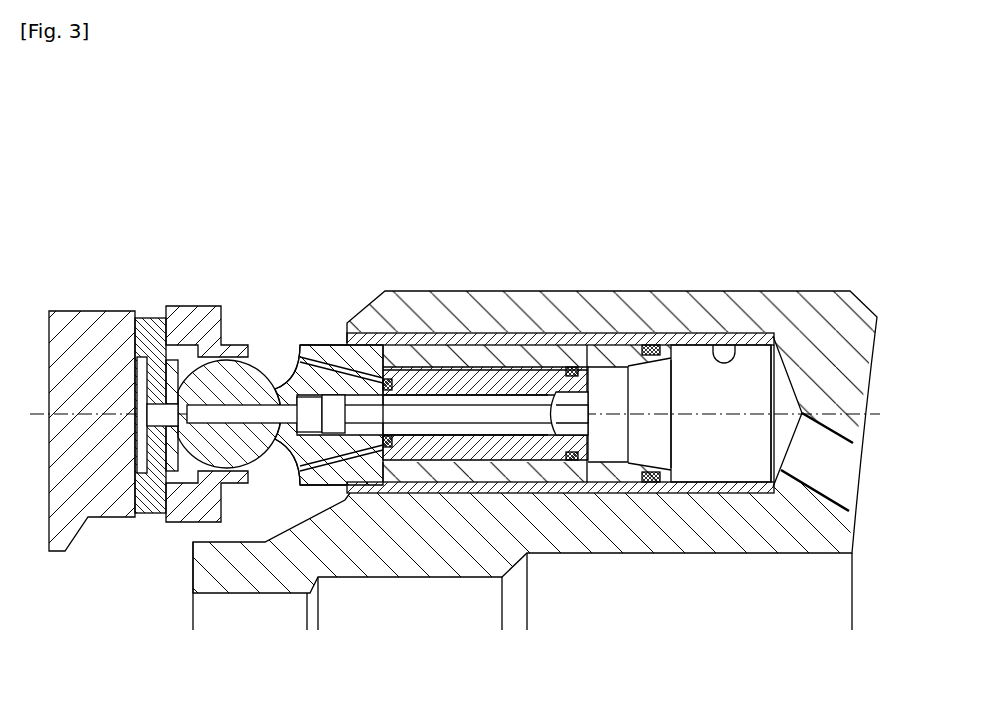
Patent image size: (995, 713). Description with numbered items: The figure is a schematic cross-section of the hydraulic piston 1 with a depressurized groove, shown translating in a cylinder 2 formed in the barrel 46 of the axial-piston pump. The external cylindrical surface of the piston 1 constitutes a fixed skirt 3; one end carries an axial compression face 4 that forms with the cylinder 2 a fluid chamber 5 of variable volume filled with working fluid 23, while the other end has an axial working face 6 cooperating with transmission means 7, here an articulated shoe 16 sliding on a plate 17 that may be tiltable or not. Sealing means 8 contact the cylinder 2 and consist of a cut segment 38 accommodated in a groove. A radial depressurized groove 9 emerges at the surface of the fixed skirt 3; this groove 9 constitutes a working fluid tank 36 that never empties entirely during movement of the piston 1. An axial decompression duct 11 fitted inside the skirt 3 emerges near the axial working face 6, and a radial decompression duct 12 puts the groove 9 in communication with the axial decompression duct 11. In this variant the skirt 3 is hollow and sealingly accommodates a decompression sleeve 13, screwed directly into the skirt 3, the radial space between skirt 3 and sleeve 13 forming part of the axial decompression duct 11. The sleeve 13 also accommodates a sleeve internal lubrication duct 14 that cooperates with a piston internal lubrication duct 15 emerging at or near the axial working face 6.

The hydraulic piston 1 is at (378, 352).
The cylinder 2 is at (725, 355).
The fixed skirt 3 is at (477, 343).
The axial compression face 4 is at (677, 447).
The fluid chamber 5 is at (745, 370).
The axial working face 6 is at (150, 448).
The transmission means 7 is at (150, 318).
The sealing means 8 is at (655, 345).
The radial depressurized groove 9 is at (543, 360).
The axial decompression duct 11 is at (327, 343).
The radial decompression duct 12 is at (522, 360).
The decompression sleeve 13 is at (447, 388).
The sleeve internal lubrication duct 14 is at (463, 410).
The piston internal lubrication duct 15 is at (285, 380).
The articulated shoe 16 is at (235, 320).
The plate 17 is at (98, 320).
The working fluid 23 is at (731, 434).
The working fluid tank 36 is at (550, 493).
The cut segment 38 is at (652, 482).
The barrel 46 is at (443, 548).